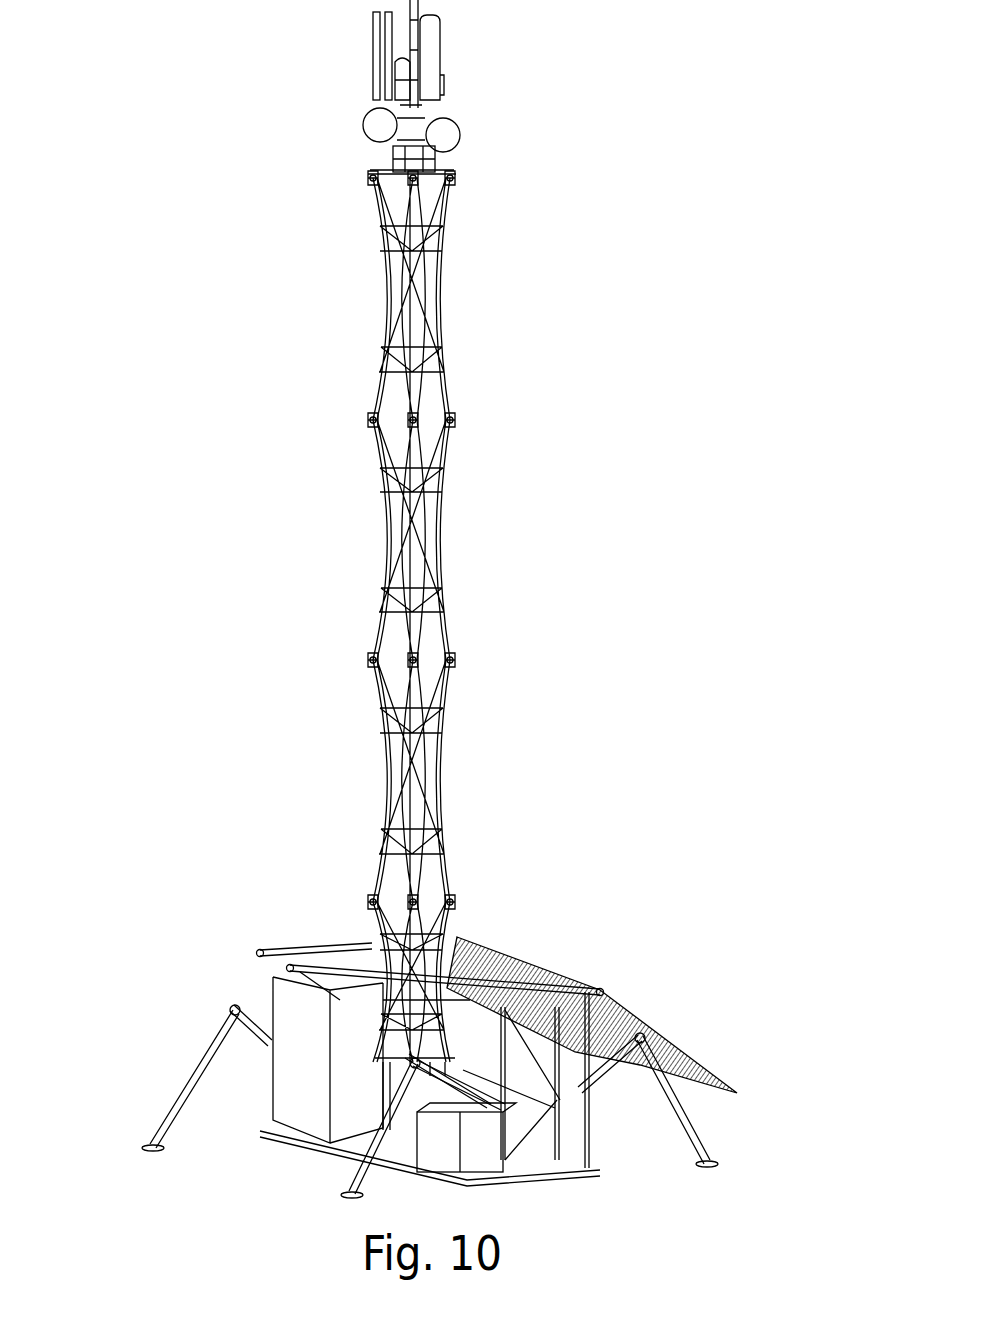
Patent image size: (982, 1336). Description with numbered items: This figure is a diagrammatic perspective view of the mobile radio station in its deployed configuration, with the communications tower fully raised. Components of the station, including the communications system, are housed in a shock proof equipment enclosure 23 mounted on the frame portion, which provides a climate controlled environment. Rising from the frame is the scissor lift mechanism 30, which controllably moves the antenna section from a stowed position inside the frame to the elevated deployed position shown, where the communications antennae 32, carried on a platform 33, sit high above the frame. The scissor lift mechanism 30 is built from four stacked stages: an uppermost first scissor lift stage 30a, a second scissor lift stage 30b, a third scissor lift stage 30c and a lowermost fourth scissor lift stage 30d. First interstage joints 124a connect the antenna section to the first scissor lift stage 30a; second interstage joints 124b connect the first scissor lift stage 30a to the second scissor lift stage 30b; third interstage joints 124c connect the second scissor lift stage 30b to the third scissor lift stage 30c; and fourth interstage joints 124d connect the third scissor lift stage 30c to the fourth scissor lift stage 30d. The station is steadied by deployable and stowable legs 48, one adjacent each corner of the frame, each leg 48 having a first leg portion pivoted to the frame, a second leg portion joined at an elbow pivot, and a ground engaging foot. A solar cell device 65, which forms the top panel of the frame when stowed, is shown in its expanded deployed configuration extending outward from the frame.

The equipment enclosure 23 is at (283, 992).
The scissor lift mechanism 30 is at (636, 280).
The first scissor lift stage 30a is at (448, 231).
The second scissor lift stage 30b is at (450, 574).
The third scissor lift stage 30c is at (450, 815).
The fourth scissor lift stage 30d is at (450, 933).
The communications antennae 32 is at (437, 39).
The platform 33 is at (386, 165).
The deployable and stowable legs 48 is at (134, 1096).
The solar cell device 65 is at (678, 1001).
The first interstage joints 124a is at (371, 179).
The second interstage joints 124b is at (370, 419).
The third interstage joints 124c is at (370, 660).
The fourth interstage joints 124d is at (371, 902).